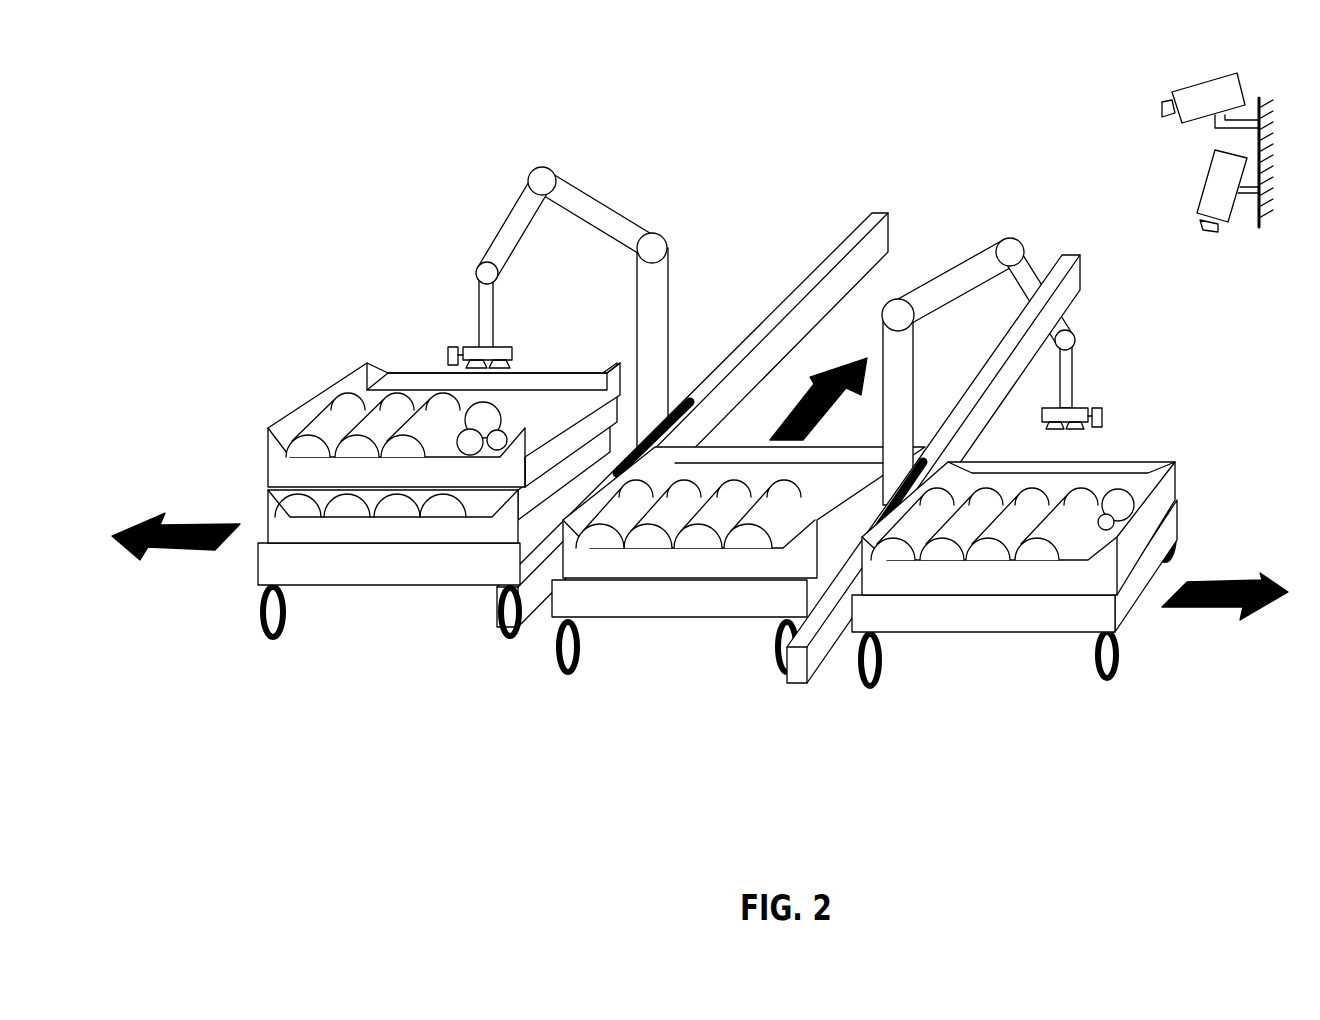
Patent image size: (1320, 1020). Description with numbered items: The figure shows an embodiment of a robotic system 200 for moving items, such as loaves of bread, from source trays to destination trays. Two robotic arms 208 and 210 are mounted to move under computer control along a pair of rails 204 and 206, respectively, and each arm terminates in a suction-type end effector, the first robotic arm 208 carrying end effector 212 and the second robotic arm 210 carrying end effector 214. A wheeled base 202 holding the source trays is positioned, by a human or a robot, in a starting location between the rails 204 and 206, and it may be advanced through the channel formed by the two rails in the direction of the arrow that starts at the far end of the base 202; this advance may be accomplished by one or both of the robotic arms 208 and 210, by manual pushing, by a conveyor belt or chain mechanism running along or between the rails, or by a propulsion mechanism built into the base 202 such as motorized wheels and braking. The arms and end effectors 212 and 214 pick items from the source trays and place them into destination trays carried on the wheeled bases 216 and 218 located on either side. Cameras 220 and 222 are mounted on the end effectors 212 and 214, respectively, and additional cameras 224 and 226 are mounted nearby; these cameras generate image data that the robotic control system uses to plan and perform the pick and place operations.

The system 200 is at (248, 98).
The wheeled base 202 is at (712, 618).
The rail 204 is at (863, 228).
The rail 206 is at (1072, 292).
The robotic arm 208 is at (598, 196).
The robotic arm 210 is at (965, 257).
The suction-type end effector 212 is at (514, 353).
The suction-type end effector 214 is at (1082, 407).
The wheeled base 216 is at (412, 588).
The wheeled base 218 is at (993, 634).
The camera 220 is at (447, 353).
The camera 222 is at (1104, 416).
The camera 224 is at (1190, 90).
The camera 226 is at (1200, 192).